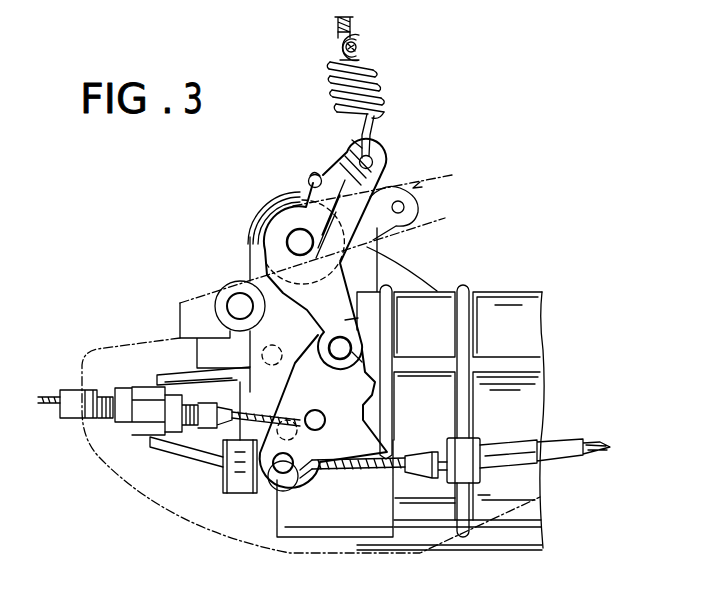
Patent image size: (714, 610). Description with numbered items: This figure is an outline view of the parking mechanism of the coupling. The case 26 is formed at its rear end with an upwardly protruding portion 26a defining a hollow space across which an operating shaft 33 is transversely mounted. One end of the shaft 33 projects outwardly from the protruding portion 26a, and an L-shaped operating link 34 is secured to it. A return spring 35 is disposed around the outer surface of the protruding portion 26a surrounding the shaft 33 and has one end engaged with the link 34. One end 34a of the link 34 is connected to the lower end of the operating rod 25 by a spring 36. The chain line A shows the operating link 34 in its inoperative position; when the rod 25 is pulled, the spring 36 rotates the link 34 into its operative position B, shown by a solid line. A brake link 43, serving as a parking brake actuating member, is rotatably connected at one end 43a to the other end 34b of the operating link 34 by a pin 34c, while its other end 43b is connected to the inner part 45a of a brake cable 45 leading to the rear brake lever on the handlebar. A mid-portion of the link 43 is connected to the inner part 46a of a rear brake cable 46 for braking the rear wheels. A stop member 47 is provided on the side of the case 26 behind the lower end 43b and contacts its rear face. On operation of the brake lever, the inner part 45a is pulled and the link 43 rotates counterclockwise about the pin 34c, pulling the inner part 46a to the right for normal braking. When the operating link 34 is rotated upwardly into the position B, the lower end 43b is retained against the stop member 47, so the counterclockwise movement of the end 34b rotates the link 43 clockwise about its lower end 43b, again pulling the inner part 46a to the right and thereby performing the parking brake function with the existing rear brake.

The operating rod 25 is at (338, 22).
The spring 36 is at (380, 78).
The operative position B is at (330, 149).
The return spring 35 is at (309, 177).
The one end of operating link 34a is at (380, 160).
The inoperative position A is at (465, 168).
The operating shaft 33 is at (290, 232).
The operating link 34 is at (373, 218).
The upwardly protruding portion 26a is at (405, 275).
The other end of operating link 34b is at (350, 318).
The one end of brake link 43a is at (352, 342).
The pin 34c is at (350, 356).
The brake link 43 is at (337, 410).
The other end of brake link 43b is at (250, 497).
The brake cable 45 is at (563, 450).
The inner part of brake cable 45a is at (330, 462).
The rear brake cable 46 is at (73, 417).
The inner part of rear brake cable 46a is at (233, 424).
The stop member 47 is at (233, 478).
The case 26 is at (504, 542).